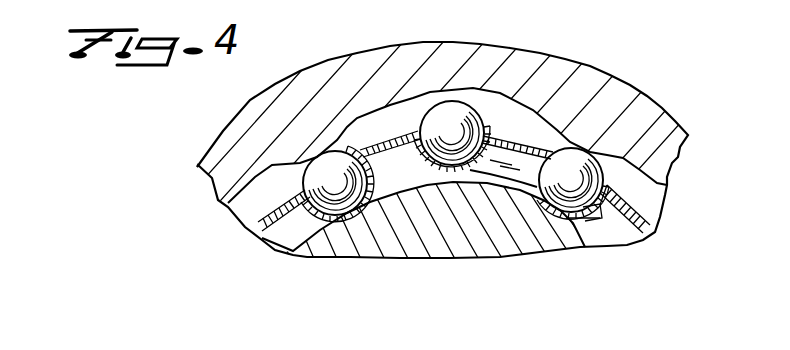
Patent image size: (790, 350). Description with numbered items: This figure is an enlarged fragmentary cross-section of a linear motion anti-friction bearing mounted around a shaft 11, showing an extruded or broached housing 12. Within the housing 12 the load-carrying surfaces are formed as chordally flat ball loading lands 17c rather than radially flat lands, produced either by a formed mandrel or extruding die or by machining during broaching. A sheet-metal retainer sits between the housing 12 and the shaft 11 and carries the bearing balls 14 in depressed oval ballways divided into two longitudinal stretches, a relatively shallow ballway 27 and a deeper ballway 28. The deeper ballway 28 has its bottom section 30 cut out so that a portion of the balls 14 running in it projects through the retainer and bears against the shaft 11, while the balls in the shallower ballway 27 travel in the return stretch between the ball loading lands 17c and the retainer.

The shaft 11 is at (507, 240).
The housing 12 is at (550, 73).
The bearing balls 14 is at (455, 127).
The chordally flat ball loading lands 17c is at (588, 150).
The ballway 27 is at (457, 168).
The ballway 28 is at (600, 205).
The bottom section 30 is at (568, 212).